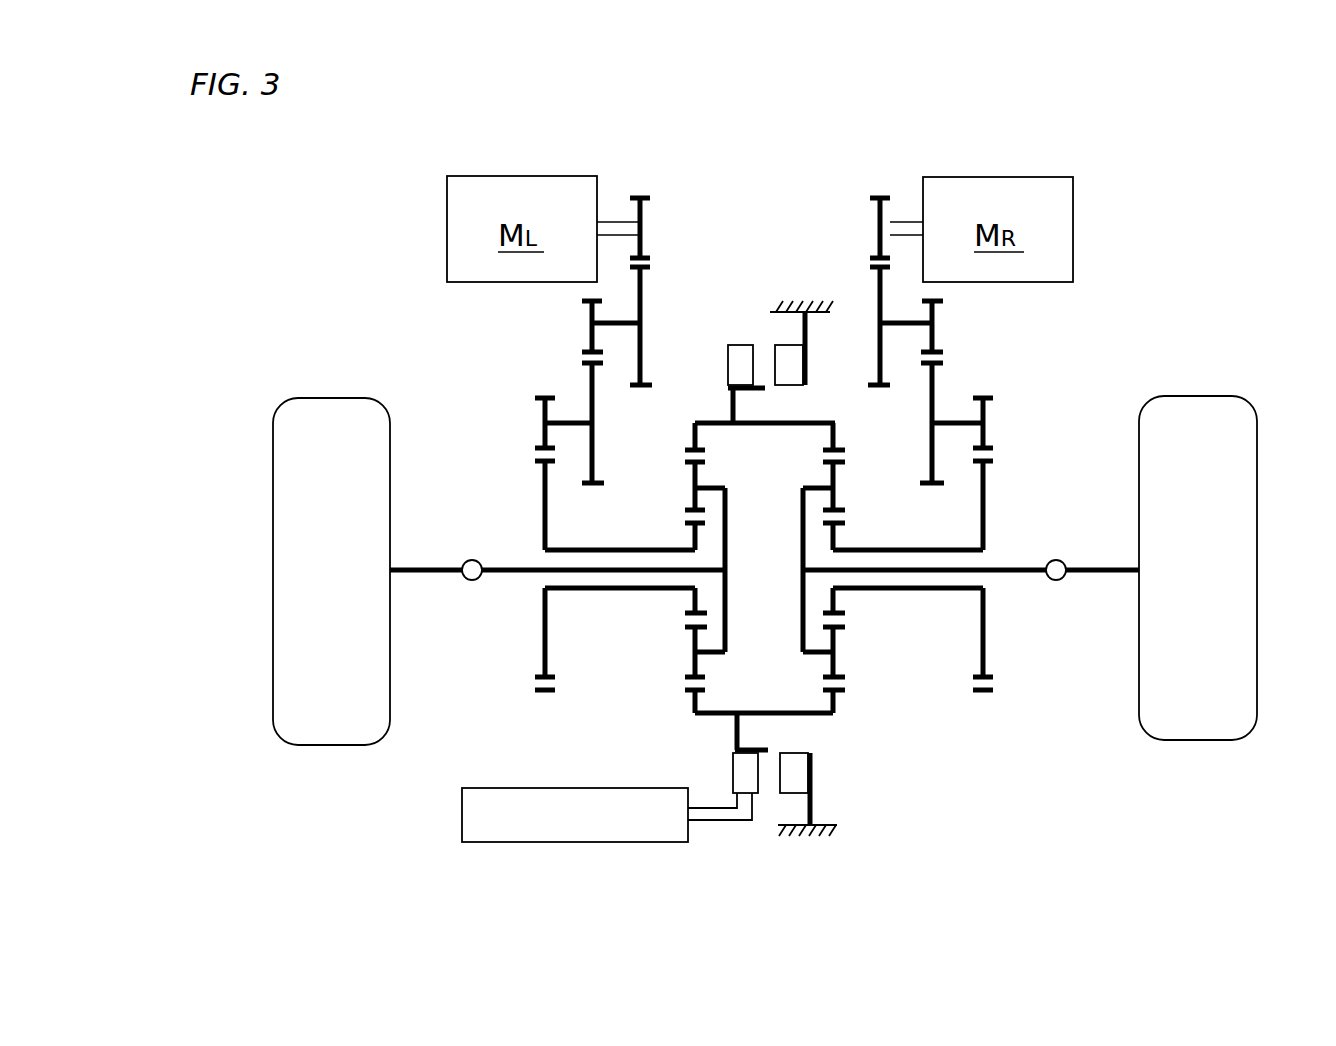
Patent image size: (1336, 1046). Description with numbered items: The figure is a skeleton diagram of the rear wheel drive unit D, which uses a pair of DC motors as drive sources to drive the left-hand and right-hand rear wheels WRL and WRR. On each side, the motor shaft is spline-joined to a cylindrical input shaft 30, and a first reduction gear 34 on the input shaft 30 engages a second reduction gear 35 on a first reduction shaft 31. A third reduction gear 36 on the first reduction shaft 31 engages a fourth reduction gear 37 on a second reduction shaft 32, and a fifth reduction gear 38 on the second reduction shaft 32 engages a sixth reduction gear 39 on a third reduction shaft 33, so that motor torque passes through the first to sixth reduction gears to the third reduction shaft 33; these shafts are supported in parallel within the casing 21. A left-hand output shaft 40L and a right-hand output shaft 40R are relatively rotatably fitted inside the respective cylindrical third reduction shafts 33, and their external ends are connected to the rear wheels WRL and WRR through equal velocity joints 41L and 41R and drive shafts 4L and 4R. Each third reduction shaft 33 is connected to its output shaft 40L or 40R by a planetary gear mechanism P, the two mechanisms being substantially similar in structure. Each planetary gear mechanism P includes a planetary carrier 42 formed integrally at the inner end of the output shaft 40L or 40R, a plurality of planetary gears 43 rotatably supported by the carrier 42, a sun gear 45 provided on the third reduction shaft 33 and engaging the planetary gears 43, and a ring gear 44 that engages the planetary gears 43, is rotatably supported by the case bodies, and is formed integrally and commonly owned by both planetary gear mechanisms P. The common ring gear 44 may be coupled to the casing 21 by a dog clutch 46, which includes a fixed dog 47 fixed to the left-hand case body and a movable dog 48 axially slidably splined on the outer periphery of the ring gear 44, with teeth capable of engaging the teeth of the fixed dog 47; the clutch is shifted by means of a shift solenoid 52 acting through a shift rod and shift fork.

The input shaft 30 is at (614, 222).
The first reduction gear 34 is at (648, 197).
The second reduction gear 35 is at (650, 267).
The first reduction shaft 31 is at (767, 352).
The third reduction gear 36 is at (585, 302).
The fourth reduction gear 37 is at (585, 363).
The second reduction shaft 32 is at (573, 427).
The fifth reduction gear 38 is at (535, 398).
The sixth reduction gear 39 is at (537, 462).
The third reduction shaft 33 is at (640, 545).
The ring gear 44 is at (685, 448).
The planetary gears 43 is at (828, 458).
The planetary carrier 42 is at (728, 512).
The sun gear 45 is at (685, 625).
The rear wheel drive unit D is at (740, 288).
The planetary gear mechanism P is at (680, 704).
The movable dog 48 is at (740, 772).
The fixed dog 47 is at (790, 758).
The casing 21 is at (825, 825).
The dog clutch 46 is at (760, 808).
The shift solenoid 52 is at (594, 833).
The left-hand drive shaft 4L is at (427, 577).
The left-hand equal velocity joint 41L is at (471, 560).
The left-hand output shaft 40L is at (502, 577).
The right-hand drive shaft 4R is at (1105, 577).
The right-hand equal velocity joint 41R is at (1061, 560).
The right-hand output shaft 40R is at (1027, 577).
The left-hand rear wheel WRL is at (305, 745).
The right-hand rear wheel WRR is at (1218, 740).